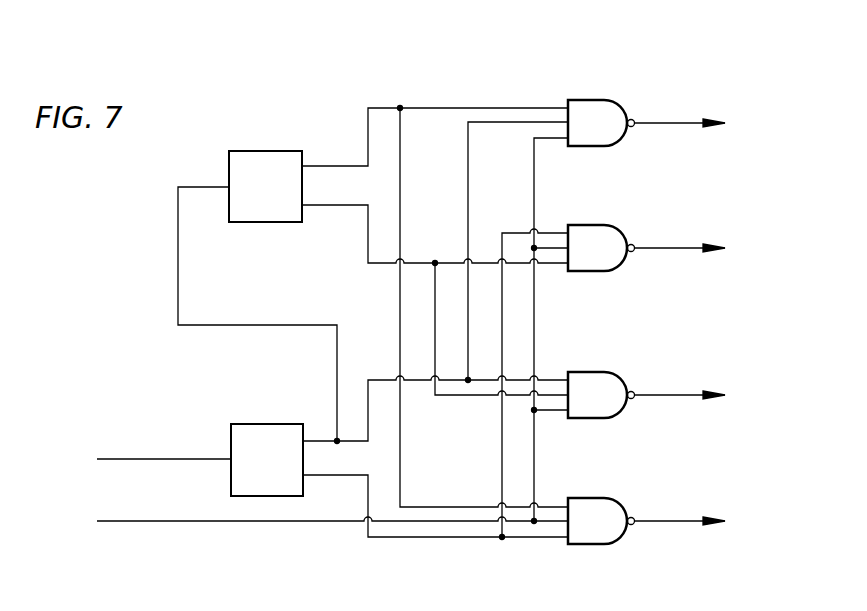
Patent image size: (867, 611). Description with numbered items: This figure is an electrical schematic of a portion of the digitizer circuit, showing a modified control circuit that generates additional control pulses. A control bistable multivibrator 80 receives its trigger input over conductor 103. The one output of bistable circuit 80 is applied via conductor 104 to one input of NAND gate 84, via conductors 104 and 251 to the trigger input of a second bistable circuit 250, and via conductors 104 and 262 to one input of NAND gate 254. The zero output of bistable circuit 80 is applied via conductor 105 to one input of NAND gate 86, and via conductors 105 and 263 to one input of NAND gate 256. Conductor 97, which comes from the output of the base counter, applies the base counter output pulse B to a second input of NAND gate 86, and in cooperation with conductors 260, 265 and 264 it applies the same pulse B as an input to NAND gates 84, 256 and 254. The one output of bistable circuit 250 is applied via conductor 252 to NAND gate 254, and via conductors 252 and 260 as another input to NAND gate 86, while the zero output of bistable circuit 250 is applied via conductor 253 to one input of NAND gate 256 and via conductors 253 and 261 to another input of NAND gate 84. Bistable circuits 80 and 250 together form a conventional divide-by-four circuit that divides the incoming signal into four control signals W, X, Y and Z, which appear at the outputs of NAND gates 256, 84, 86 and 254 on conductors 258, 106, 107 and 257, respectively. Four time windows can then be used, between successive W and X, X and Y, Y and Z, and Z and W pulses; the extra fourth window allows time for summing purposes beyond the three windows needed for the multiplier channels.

The bistable circuit 250 is at (263, 150).
The control bistable multivibrator 80 is at (262, 423).
The conductor 252 is at (387, 107).
The conductor 253 is at (336, 208).
The conductor 251 is at (222, 327).
The conductor 104 is at (380, 378).
The conductor 105 is at (368, 532).
The conductor 103 is at (125, 455).
The conductor 97 is at (130, 525).
The conductor 260 is at (402, 157).
The conductor 262 is at (468, 207).
The conductor 263 is at (500, 463).
The conductor 261 is at (450, 398).
The conductor 264 is at (552, 246).
The conductor 265 is at (553, 412).
The NAND gate 254 is at (597, 100).
The NAND gate 256 is at (607, 225).
The NAND gate 84 is at (597, 372).
The NAND gate 86 is at (608, 498).
The conductor 257 is at (682, 126).
The conductor 258 is at (685, 251).
The conductor 106 is at (685, 397).
The conductor 107 is at (685, 524).